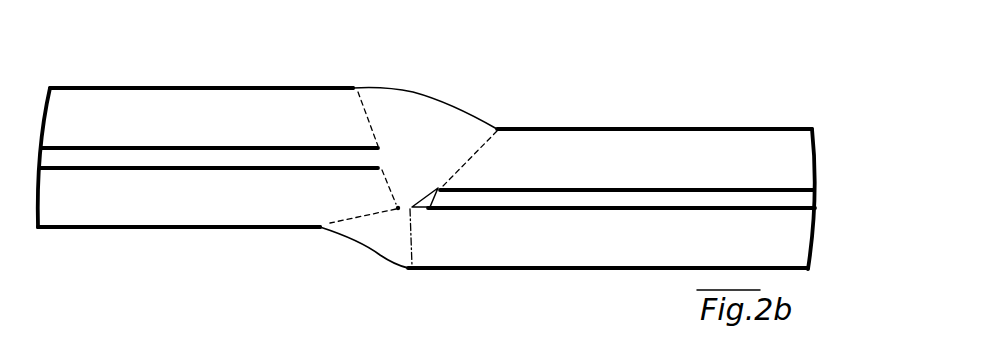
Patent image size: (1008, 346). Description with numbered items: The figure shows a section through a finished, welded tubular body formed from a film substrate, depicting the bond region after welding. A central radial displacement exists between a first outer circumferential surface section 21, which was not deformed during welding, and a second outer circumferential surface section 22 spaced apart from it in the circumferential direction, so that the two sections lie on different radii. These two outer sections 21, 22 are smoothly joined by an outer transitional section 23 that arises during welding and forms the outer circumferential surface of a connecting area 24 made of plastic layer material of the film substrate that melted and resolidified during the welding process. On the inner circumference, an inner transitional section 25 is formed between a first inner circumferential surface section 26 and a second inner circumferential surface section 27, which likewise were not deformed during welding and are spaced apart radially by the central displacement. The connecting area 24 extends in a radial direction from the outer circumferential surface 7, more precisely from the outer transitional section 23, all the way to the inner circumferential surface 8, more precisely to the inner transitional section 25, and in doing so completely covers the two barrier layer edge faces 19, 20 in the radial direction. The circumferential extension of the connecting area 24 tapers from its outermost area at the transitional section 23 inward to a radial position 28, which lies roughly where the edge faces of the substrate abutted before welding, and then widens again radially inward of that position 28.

The outer circumferential surface 7 is at (222, 87).
The inner circumferential surface 8 is at (166, 229).
The barrier layer edge face 19 is at (392, 151).
The barrier layer edge face 20 is at (413, 209).
The first outer circumferential surface section 21 is at (303, 87).
The second outer circumferential surface section 22 is at (572, 127).
The outer transitional section 23 is at (438, 93).
The connecting area 24 is at (443, 134).
The inner transitional section 25 is at (369, 254).
The first inner circumferential surface section 26 is at (275, 229).
The second inner circumferential surface section 27 is at (539, 270).
The radial position 28 is at (395, 210).